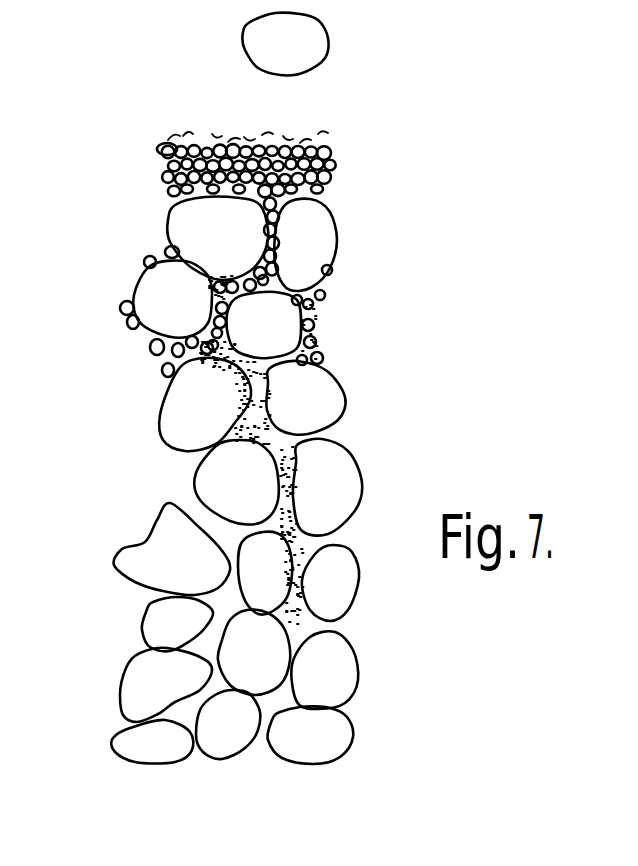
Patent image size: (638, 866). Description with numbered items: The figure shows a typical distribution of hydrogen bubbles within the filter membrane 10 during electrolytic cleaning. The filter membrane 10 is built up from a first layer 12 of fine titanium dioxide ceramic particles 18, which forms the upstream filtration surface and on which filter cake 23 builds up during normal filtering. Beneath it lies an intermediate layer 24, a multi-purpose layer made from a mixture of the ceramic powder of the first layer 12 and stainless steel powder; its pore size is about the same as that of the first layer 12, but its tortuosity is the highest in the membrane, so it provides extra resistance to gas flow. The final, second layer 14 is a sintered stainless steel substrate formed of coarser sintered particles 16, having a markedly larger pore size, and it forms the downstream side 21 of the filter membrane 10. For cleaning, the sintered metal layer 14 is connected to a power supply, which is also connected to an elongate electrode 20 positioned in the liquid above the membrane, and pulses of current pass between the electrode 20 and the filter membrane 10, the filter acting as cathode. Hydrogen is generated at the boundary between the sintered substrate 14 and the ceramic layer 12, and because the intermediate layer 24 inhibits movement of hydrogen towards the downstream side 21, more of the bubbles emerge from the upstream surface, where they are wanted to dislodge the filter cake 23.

The filter membrane 10 is at (322, 743).
The first layer 12 is at (160, 170).
The second layer 14 is at (358, 685).
The sintered particles 16 is at (158, 618).
The ceramic particles 18 is at (158, 148).
The electrode 20 is at (310, 42).
The downstream side 21 is at (247, 757).
The filter cake 23 is at (223, 140).
The intermediate layer 24 is at (167, 230).